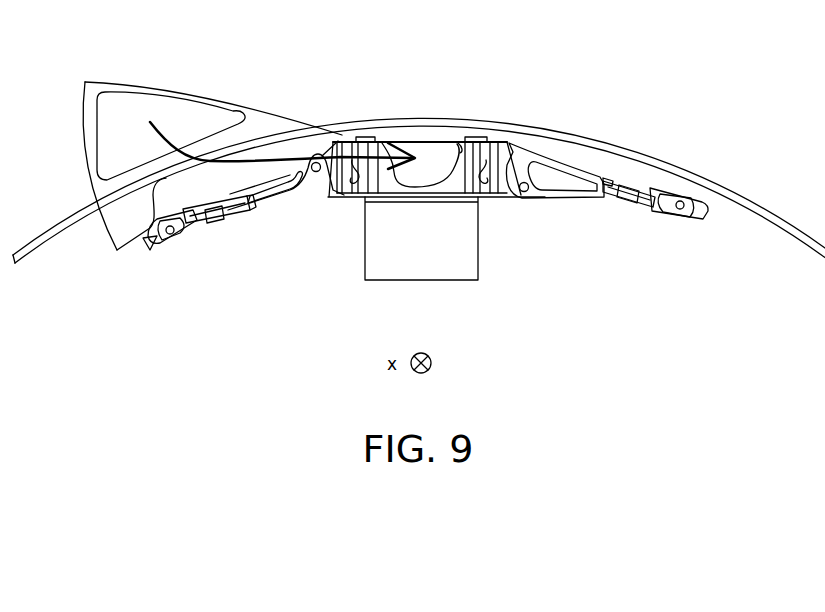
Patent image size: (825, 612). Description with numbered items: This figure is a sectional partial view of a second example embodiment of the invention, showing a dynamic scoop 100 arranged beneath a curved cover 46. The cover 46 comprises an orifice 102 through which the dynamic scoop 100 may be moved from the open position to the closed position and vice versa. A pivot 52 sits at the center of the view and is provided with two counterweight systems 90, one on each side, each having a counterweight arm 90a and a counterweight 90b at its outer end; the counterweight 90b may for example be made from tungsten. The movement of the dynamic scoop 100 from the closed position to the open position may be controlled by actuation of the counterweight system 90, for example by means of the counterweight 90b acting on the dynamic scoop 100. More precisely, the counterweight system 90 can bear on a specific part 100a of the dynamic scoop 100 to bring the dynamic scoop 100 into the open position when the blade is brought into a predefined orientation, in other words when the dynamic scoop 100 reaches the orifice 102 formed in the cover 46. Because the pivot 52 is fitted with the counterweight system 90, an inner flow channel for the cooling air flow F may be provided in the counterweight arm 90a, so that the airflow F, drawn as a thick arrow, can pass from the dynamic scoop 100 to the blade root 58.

The cover 46 is at (643, 158).
The pivot 52 is at (478, 200).
The blade root 58 is at (422, 147).
The counterweight system 90 is at (287, 213).
The counterweight arm 90a is at (240, 220).
The counterweight 90b is at (155, 238).
The dynamic scoop 100 is at (160, 90).
The specific part of the dynamic scoop 100a is at (123, 228).
The orifice 102 is at (260, 133).
The cooling air flow F is at (247, 167).